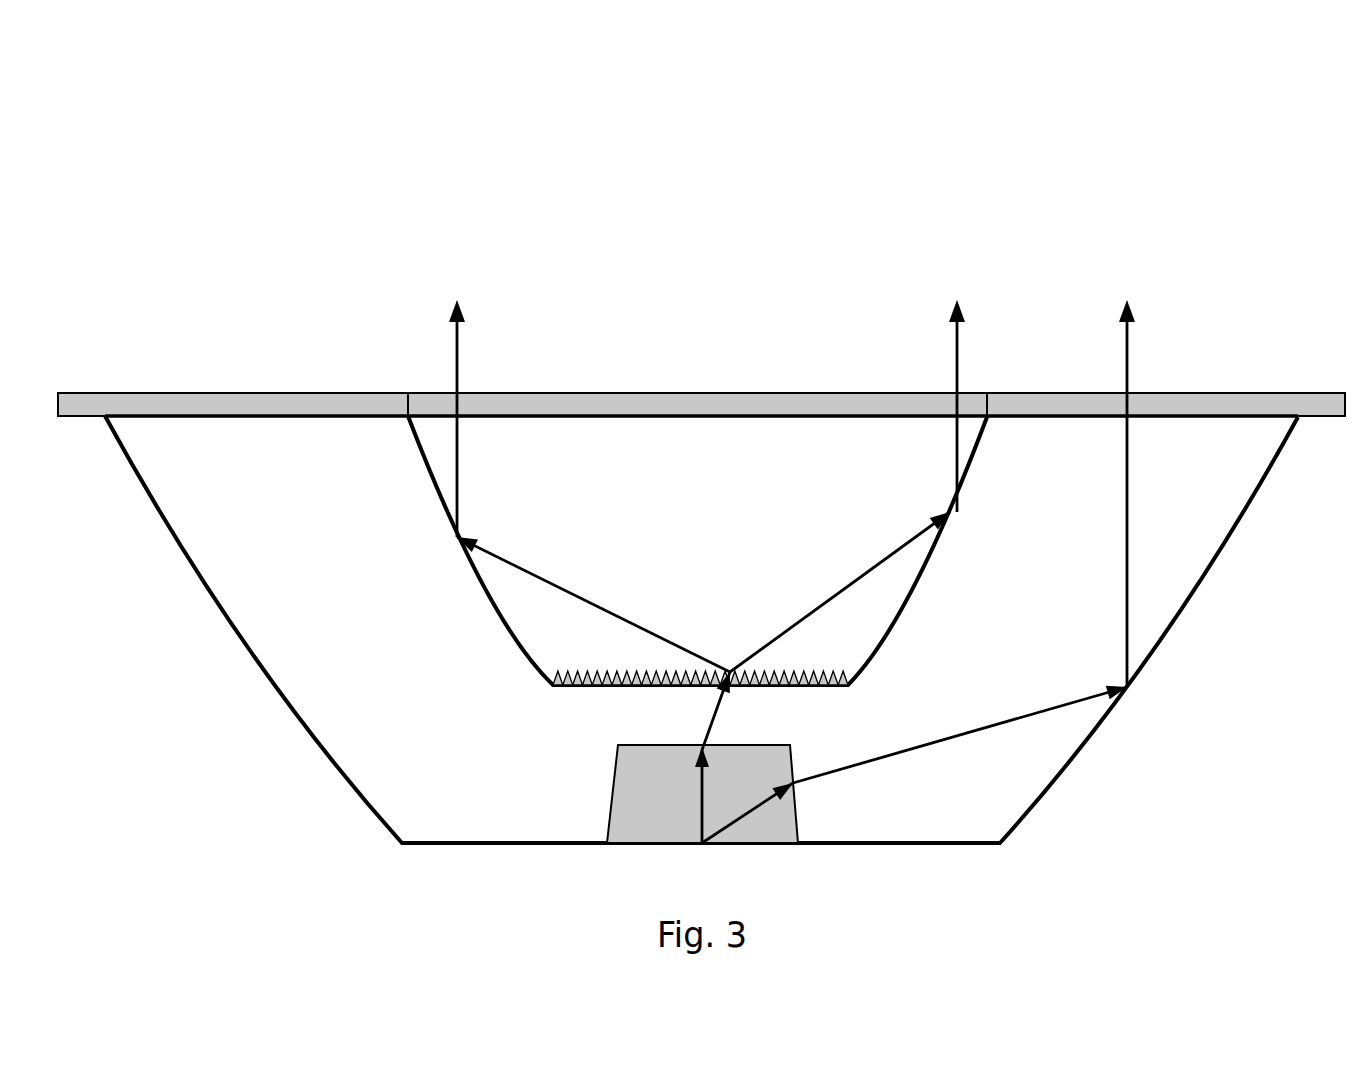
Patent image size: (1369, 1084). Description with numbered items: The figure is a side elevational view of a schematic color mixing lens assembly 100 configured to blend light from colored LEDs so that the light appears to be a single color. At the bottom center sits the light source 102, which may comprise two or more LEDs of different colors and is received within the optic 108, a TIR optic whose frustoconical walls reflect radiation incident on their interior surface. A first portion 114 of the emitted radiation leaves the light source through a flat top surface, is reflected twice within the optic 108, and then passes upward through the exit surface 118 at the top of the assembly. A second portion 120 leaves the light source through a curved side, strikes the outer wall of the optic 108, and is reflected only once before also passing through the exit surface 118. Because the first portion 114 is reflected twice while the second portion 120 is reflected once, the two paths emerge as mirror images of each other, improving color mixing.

The color mixing lens assembly 100 is at (1022, 127).
The light source 102 is at (703, 846).
The optic 108 is at (1152, 655).
The first portion of the first and second electromagnetic radiation 114 is at (700, 805).
The exit surface 118 is at (1163, 392).
The second portion of the first and second electromagnetic radiation 120 is at (867, 763).